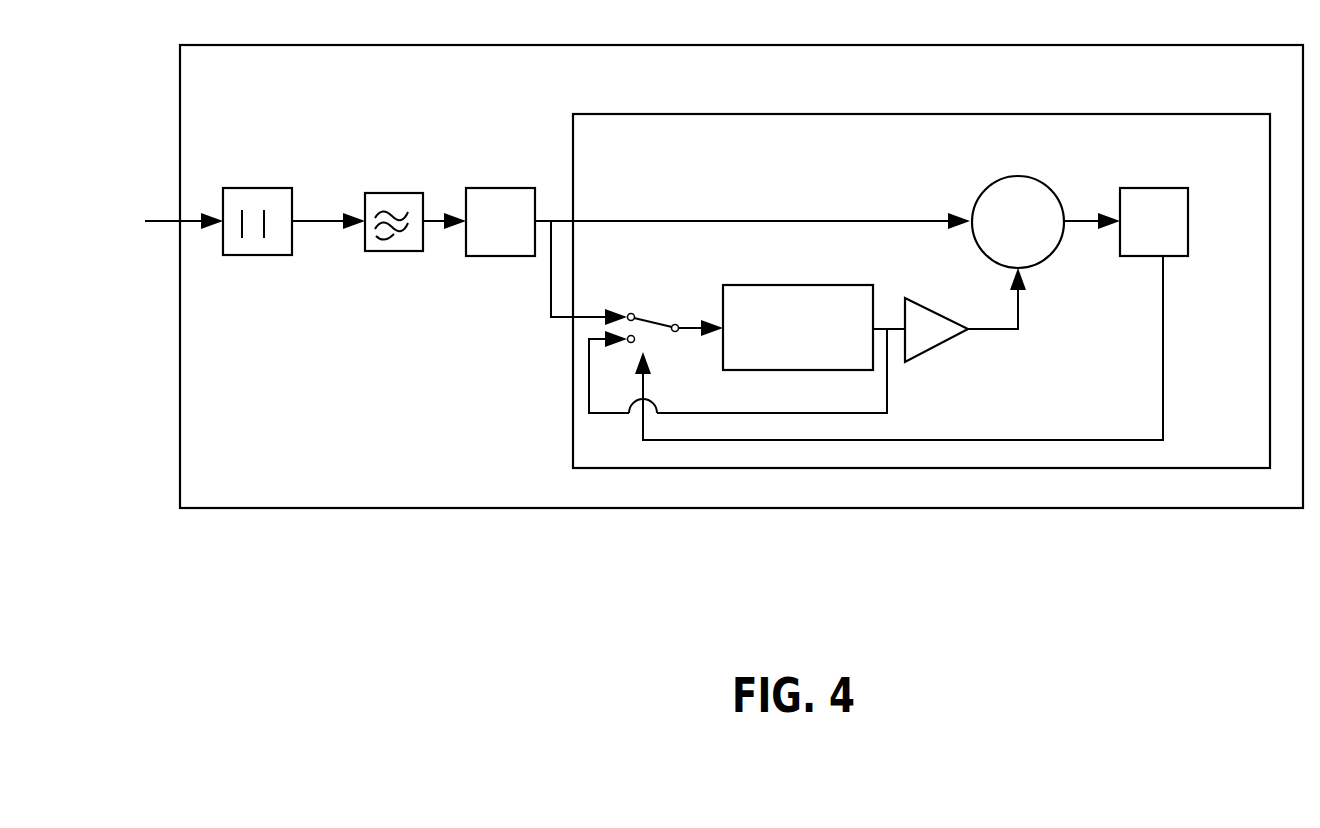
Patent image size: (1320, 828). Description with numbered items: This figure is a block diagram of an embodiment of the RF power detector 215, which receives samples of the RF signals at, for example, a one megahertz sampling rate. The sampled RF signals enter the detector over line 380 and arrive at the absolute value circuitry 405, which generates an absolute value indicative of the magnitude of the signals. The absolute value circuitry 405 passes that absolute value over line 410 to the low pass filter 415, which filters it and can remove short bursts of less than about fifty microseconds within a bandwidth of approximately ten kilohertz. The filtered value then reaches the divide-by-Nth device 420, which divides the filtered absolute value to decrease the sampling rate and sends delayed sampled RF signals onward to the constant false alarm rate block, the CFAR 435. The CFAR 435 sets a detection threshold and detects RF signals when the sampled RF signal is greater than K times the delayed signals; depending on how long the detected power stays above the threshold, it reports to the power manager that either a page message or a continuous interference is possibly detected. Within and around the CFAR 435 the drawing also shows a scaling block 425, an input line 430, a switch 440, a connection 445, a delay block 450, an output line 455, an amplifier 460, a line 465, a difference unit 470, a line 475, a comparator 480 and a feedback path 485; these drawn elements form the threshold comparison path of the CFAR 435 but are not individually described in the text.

The RF power detector 215 is at (900, 92).
The line 380 is at (158, 221).
The absolute value circuitry 405 is at (258, 188).
The line 410 is at (303, 223).
The low pass filter 415 is at (386, 193).
The divide-by-Nth device 420 is at (427, 225).
The 1/N scaling block 425 is at (480, 188).
The scaled power signal 430 is at (580, 221).
The constant false alarm rate (CFAR) 435 is at (738, 152).
The switch 440 is at (642, 280).
The switch output 445 is at (680, 332).
The delay block Z^-68/N 450 is at (760, 285).
The delayed signal 455 is at (896, 328).
The amplifier 460 is at (908, 300).
The amplified reference signal 465 is at (1018, 310).
The difference block 470 is at (1013, 176).
The difference signal 475 is at (1068, 225).
The comparator ( 0) 480 is at (1142, 188).
The detection output feedback 485 is at (1163, 297).